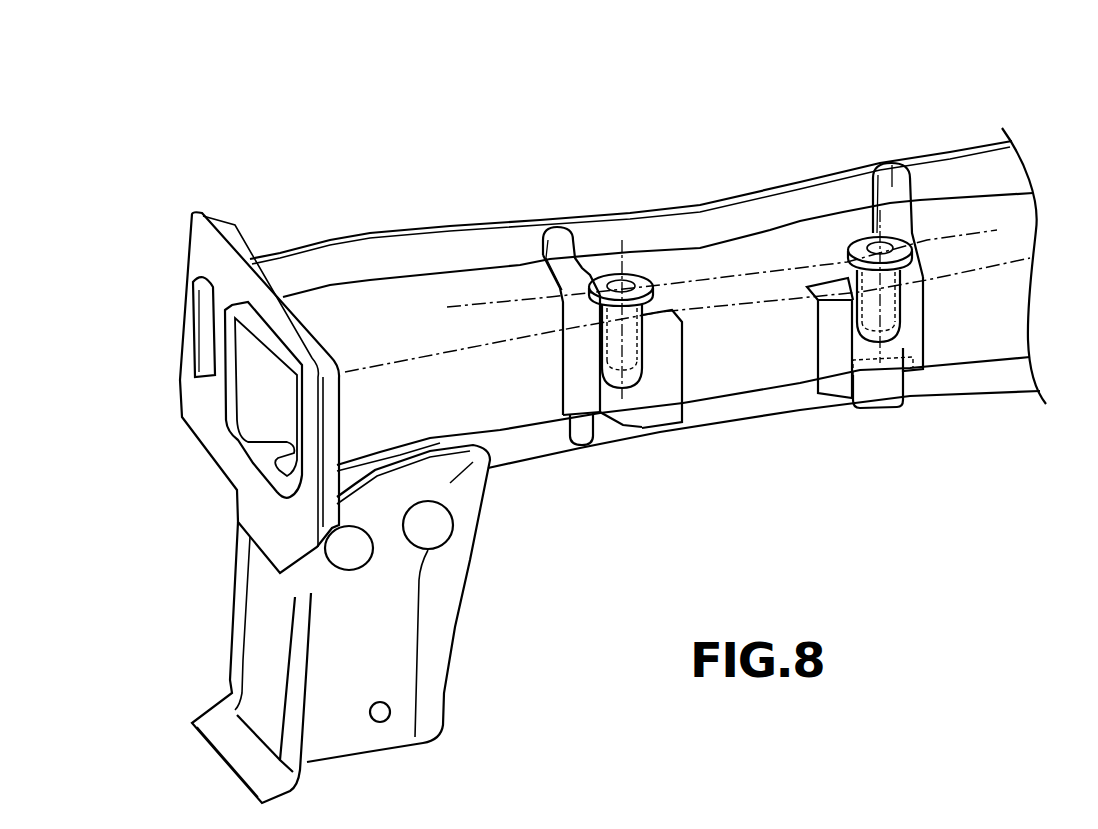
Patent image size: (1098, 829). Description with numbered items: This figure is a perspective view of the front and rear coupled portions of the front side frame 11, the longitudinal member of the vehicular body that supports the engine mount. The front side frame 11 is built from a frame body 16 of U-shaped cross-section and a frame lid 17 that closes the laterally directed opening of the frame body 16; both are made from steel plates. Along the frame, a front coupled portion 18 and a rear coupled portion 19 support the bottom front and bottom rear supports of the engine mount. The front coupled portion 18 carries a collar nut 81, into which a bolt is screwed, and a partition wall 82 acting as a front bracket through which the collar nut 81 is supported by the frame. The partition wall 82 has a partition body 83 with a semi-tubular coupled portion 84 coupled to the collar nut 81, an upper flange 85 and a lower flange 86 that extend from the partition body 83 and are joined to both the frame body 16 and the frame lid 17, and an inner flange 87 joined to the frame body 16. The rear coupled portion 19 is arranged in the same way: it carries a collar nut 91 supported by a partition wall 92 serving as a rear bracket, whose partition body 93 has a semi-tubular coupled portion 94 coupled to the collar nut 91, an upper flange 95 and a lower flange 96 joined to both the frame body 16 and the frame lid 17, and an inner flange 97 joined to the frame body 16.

The front side frame 11 is at (415, 123).
The frame body 16 is at (430, 343).
The frame lid 17 is at (443, 225).
The front coupled portion 18 is at (782, 112).
The rear coupled portion 19 is at (967, 62).
The collar nut 81 is at (638, 268).
The partition wall 82 is at (582, 278).
The partition body 83 is at (573, 383).
The semi-tubular coupled portion 84 is at (627, 383).
The upper flange 85 is at (558, 240).
The lower flange 86 is at (587, 440).
The inner flange 87 is at (660, 407).
The collar nut 91 is at (895, 237).
The partition wall 92 is at (922, 270).
The partition body 93 is at (928, 343).
The semi-tubular coupled portion 94 is at (915, 327).
The upper flange 95 is at (893, 165).
The lower flange 96 is at (887, 392).
The inner flange 97 is at (837, 380).